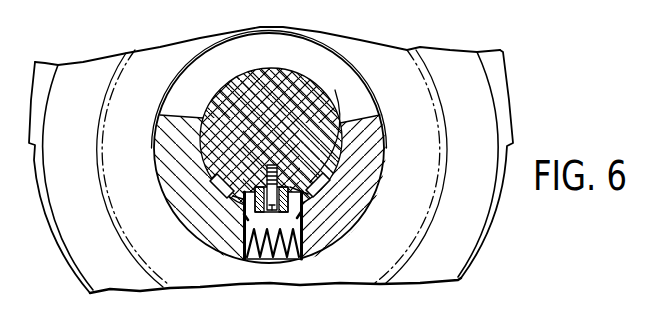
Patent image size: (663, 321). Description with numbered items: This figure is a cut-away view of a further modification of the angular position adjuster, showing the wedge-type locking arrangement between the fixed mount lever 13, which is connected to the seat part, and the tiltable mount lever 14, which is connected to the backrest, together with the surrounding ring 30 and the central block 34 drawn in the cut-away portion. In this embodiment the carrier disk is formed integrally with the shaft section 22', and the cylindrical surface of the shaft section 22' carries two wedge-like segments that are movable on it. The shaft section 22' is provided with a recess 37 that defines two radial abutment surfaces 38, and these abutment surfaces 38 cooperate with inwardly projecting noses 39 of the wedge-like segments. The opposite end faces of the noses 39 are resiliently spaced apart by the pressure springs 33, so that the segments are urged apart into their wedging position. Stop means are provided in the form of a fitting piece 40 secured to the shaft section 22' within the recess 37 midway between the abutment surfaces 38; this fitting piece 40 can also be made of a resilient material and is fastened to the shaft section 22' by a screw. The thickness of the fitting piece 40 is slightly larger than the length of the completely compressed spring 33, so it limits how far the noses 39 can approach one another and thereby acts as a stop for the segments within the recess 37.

The fixed mount lever 13 is at (103, 272).
The tiltable mount lever 14 is at (495, 82).
The shaft section 22' is at (263, 108).
The ring 30 is at (367, 88).
The pressure spring 33 is at (258, 262).
The block 34 is at (243, 213).
The recess 37 is at (327, 124).
The radial abutment surface 38 is at (210, 181).
The inwardly projecting nose 39 is at (240, 196).
The fitting piece 40 is at (303, 215).